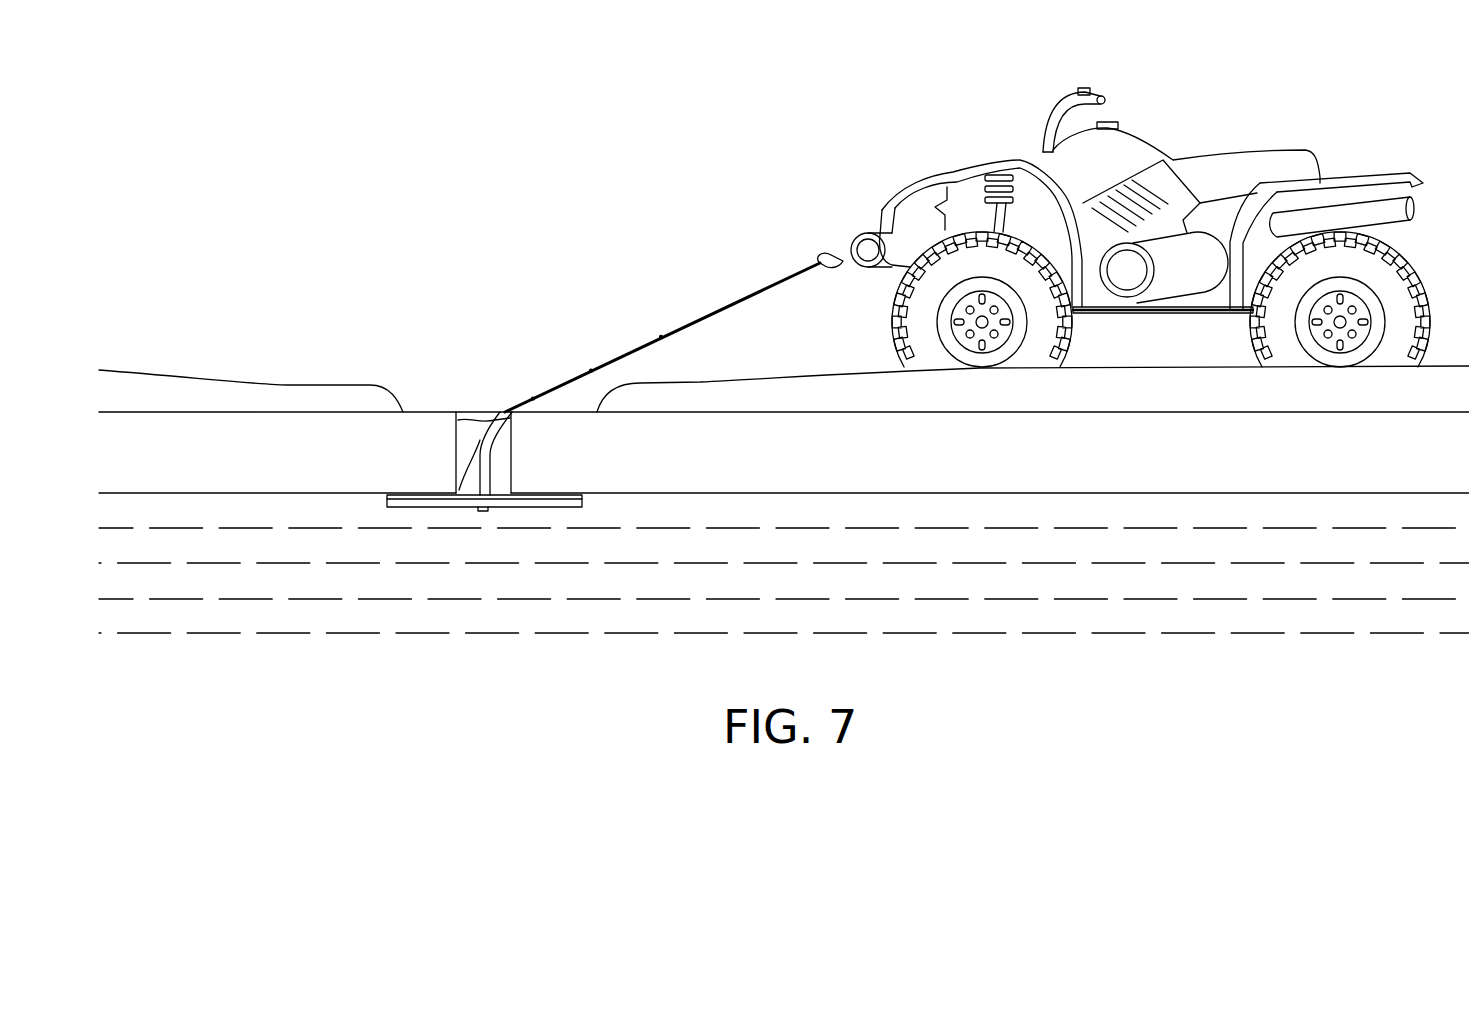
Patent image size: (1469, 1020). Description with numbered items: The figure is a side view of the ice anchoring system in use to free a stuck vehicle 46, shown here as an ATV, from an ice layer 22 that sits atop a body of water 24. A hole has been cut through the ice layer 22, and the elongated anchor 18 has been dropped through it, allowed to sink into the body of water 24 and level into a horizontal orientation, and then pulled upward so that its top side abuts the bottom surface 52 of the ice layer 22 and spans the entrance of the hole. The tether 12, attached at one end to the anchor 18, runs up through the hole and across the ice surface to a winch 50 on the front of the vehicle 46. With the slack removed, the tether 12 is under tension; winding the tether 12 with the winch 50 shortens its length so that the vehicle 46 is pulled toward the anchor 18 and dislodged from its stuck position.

The tether 12 is at (682, 322).
The anchor 18 is at (423, 517).
The ice layer 22 is at (233, 457).
The body of water 24 is at (1102, 572).
The vehicle 46 is at (1183, 160).
The winch 50 is at (852, 245).
The bottom surface 52 is at (640, 493).